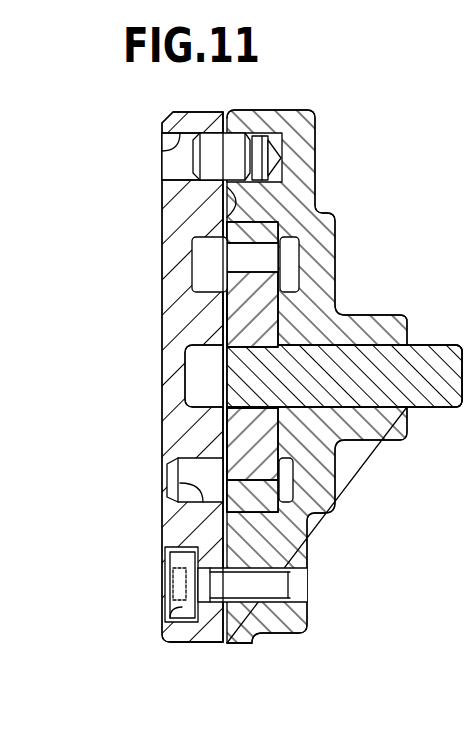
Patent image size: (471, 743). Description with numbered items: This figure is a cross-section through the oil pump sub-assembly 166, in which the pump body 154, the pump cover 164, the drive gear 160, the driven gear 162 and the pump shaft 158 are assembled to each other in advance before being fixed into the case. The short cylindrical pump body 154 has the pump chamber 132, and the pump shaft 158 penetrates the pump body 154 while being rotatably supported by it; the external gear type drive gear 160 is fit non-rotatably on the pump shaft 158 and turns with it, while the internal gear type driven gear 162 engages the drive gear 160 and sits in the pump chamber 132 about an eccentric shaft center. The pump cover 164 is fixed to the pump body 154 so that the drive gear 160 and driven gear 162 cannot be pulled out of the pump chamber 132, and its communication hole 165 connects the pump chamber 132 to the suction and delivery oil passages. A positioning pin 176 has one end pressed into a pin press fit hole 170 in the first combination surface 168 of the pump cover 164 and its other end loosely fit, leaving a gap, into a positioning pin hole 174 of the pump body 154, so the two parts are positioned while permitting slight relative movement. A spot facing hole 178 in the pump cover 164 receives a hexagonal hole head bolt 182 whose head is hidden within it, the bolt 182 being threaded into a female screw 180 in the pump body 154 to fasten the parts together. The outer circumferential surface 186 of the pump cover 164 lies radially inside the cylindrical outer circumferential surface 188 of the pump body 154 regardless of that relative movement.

The oil pump sub-assembly 166 is at (86, 178).
The pin press fit hole 170 is at (162, 155).
The positioning pin 176 is at (218, 145).
The positioning pin hole 174 is at (277, 153).
The pump body 154 is at (325, 235).
The pump chamber 132 is at (257, 258).
The pump shaft 158 is at (440, 360).
The first combination surface 168 is at (235, 212).
The pump cover 164 is at (172, 305).
The drive gear 160 is at (235, 434).
The communication hole 165 is at (180, 484).
The driven gear 162 is at (232, 508).
The hexagonal hole head bolt 182 is at (278, 585).
The female screw 180 is at (300, 597).
The spot facing hole 178 is at (168, 609).
The outer circumferential surface 186 is at (190, 643).
The cylindrical outer circumferential surface 188 is at (238, 643).